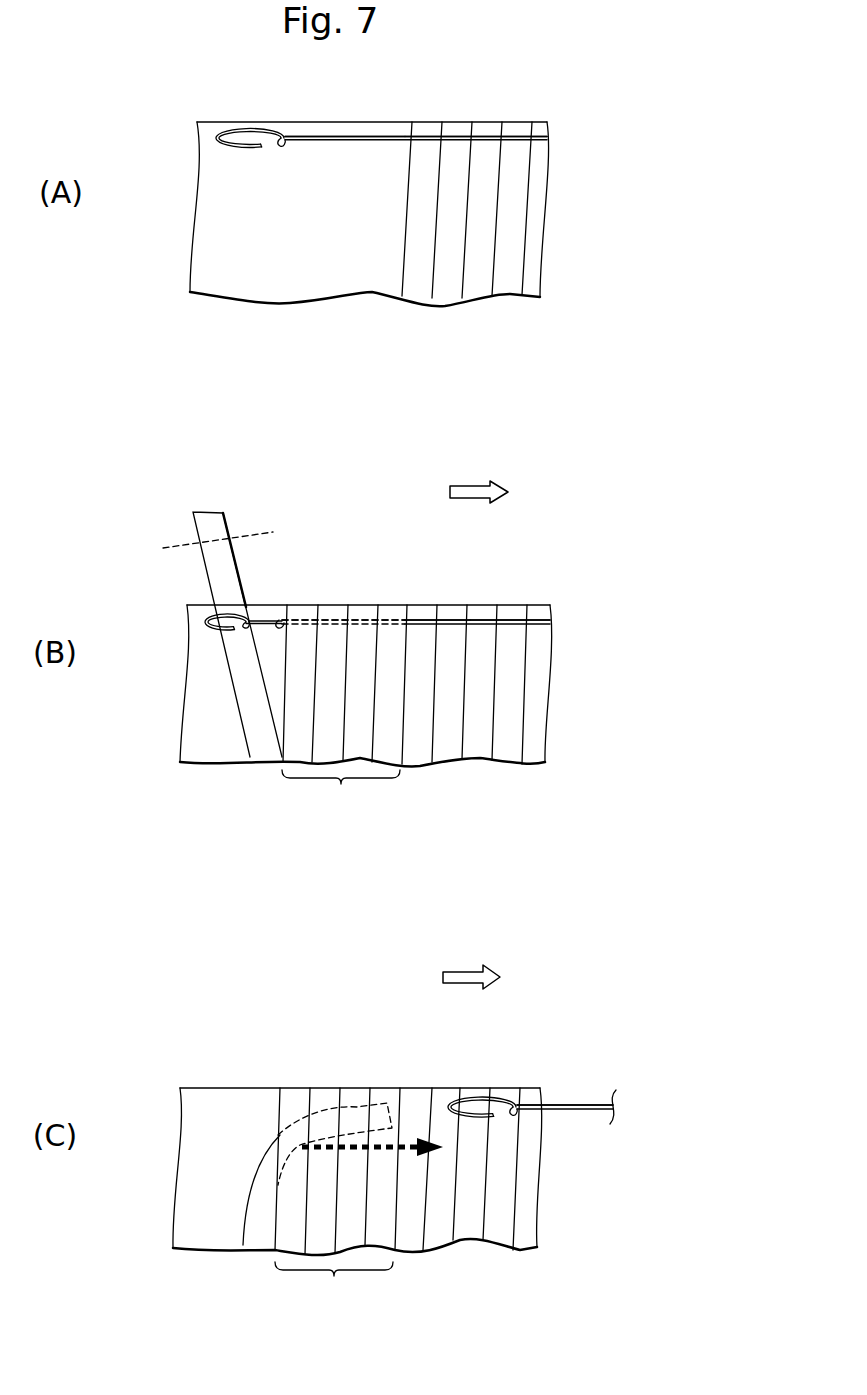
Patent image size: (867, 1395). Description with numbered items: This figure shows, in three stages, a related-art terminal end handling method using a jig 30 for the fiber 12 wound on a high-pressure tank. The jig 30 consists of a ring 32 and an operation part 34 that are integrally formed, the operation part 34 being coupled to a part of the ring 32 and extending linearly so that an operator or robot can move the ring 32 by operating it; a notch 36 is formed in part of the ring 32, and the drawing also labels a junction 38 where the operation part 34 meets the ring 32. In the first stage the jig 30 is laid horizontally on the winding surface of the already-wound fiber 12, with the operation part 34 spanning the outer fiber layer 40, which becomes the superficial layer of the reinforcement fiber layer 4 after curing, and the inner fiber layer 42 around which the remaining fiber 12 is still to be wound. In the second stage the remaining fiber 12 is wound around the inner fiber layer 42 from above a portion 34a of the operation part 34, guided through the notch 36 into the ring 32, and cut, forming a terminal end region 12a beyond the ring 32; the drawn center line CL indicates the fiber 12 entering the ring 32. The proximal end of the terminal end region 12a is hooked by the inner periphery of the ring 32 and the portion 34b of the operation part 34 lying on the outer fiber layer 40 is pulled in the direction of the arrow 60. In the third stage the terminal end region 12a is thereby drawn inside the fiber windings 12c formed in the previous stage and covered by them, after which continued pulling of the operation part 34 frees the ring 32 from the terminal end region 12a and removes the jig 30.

The reinforcement fiber layer 4 is at (367, 277).
The fiber 12 is at (193, 525).
The terminal end region 12a is at (213, 568).
The fiber windings 12c is at (337, 1039).
The jig 30 is at (329, 147).
The ring 32 is at (233, 150).
The operation part 34 is at (376, 145).
The portion of the operation part 34a is at (340, 136).
The portion of the operation part 34b is at (512, 610).
The notch 36 is at (266, 148).
The thread hook 38 is at (287, 134).
The outer fiber layer 40 is at (482, 270).
The inner fiber layer 42 is at (295, 290).
The arrow 60 is at (470, 483).
The center line CL is at (200, 547).